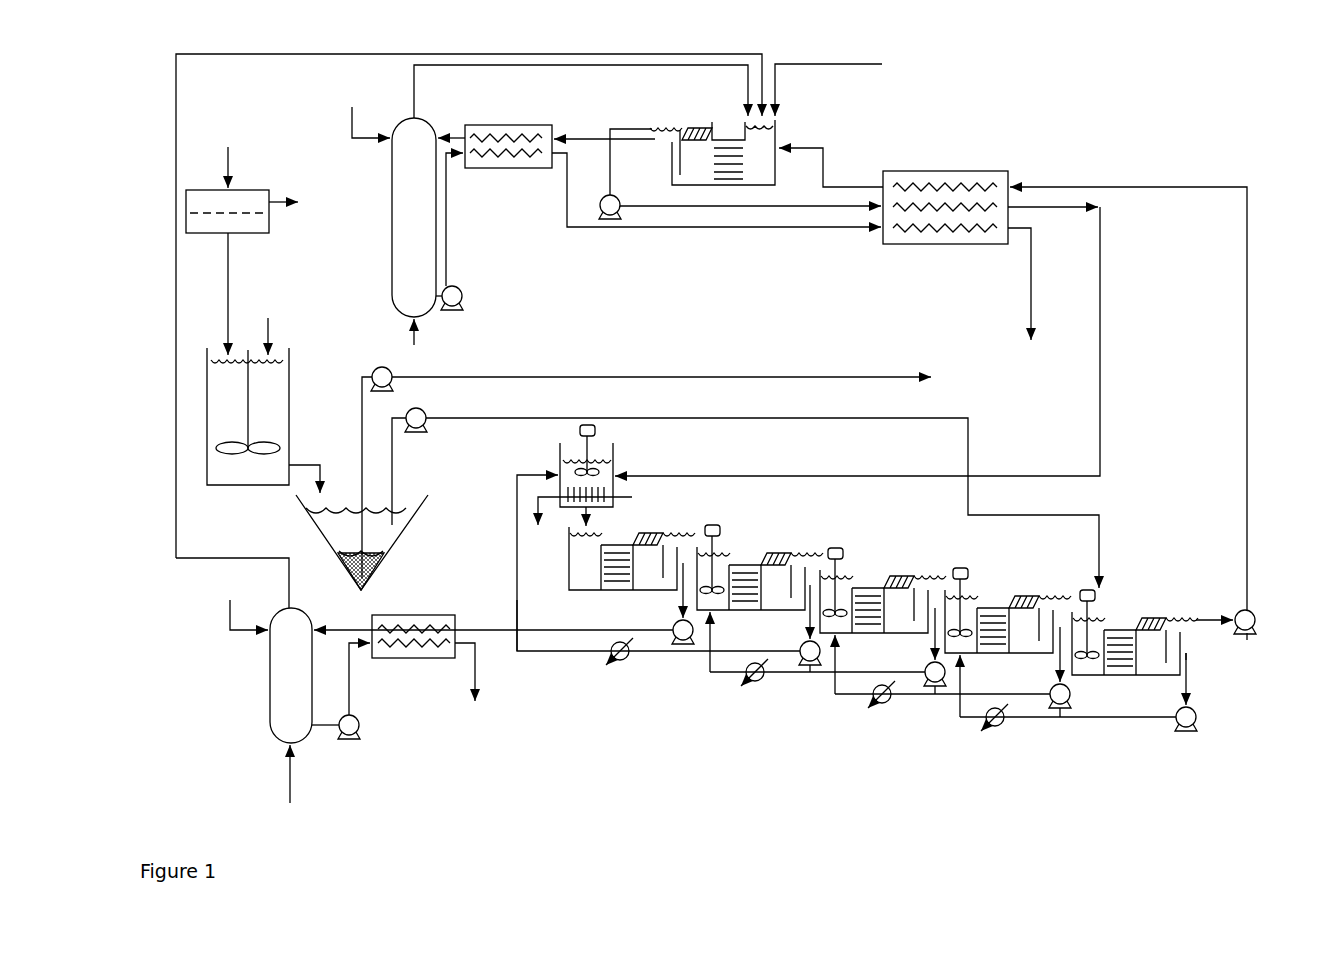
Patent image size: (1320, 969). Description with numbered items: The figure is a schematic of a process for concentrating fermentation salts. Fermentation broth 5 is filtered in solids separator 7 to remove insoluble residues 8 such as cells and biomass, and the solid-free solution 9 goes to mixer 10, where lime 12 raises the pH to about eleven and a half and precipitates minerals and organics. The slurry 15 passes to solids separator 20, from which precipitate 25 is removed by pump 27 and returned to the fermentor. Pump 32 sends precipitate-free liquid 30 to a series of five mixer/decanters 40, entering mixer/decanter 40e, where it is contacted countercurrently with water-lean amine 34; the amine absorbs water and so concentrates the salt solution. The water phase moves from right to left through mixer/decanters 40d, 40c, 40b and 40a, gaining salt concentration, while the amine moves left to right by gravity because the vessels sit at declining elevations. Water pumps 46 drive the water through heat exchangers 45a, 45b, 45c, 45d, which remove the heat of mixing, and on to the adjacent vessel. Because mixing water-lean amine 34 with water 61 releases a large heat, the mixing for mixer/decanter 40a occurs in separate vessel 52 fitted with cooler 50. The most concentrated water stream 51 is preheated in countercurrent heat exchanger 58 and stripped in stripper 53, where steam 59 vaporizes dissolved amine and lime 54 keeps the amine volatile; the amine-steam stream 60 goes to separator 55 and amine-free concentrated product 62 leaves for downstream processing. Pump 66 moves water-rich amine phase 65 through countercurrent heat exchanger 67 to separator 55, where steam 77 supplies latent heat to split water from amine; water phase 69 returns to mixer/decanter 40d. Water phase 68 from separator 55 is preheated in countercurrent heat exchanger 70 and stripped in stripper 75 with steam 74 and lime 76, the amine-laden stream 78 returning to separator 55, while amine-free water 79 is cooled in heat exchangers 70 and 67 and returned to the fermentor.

The fermentation broth 5 is at (228, 158).
The solids separator 7 is at (240, 233).
The insoluble residues 8 is at (282, 202).
The solid-free solution 9 is at (226, 312).
The mixer 10 is at (262, 485).
The lime 12 is at (269, 324).
The slurry 15 is at (302, 465).
The solids separator 20 is at (398, 540).
The precipitate 25 is at (612, 376).
The pump 27 is at (373, 369).
The precipitate-free liquid 30 is at (667, 418).
The pump 32 is at (413, 432).
The water-lean amine 34 is at (608, 155).
The mixer/decanters 40 is at (883, 608).
The mixer/decanter 40a is at (587, 590).
The mixer/decanter 40b is at (728, 610).
The mixer/decanter 40c is at (855, 632).
The mixer/decanter 40d is at (980, 655).
The mixer/decanter 40e is at (1097, 675).
The heat exchanger 45a is at (624, 664).
The heat exchanger 45b is at (759, 685).
The heat exchanger 45c is at (886, 707).
The heat exchanger 45d is at (999, 730).
The water pumps 46 is at (683, 645).
The cooler 50 is at (613, 458).
The water stream 51 is at (497, 628).
The separate vessel 52 is at (558, 466).
The stripper 53 is at (268, 725).
The lime 54 is at (252, 633).
The separator 55 is at (778, 123).
The countercurrent heat exchanger 58 is at (387, 658).
The steam 59 is at (290, 787).
The stream 60 is at (207, 557).
The water 61 is at (517, 540).
The amine-free concentrated product 62 is at (475, 667).
The water-rich amine phase 65 is at (1236, 610).
The pump 66 is at (1247, 633).
The countercurrent heat exchanger 67 is at (925, 171).
The water phase 68 is at (573, 139).
The water phase 69 is at (1188, 658).
The countercurrent heat exchanger 70 is at (495, 168).
The steam 74 is at (408, 336).
The stripper 75 is at (392, 230).
The lime 76 is at (372, 140).
The steam 77 is at (840, 64).
The stream 78 is at (638, 65).
The amine-free water 79 is at (446, 240).